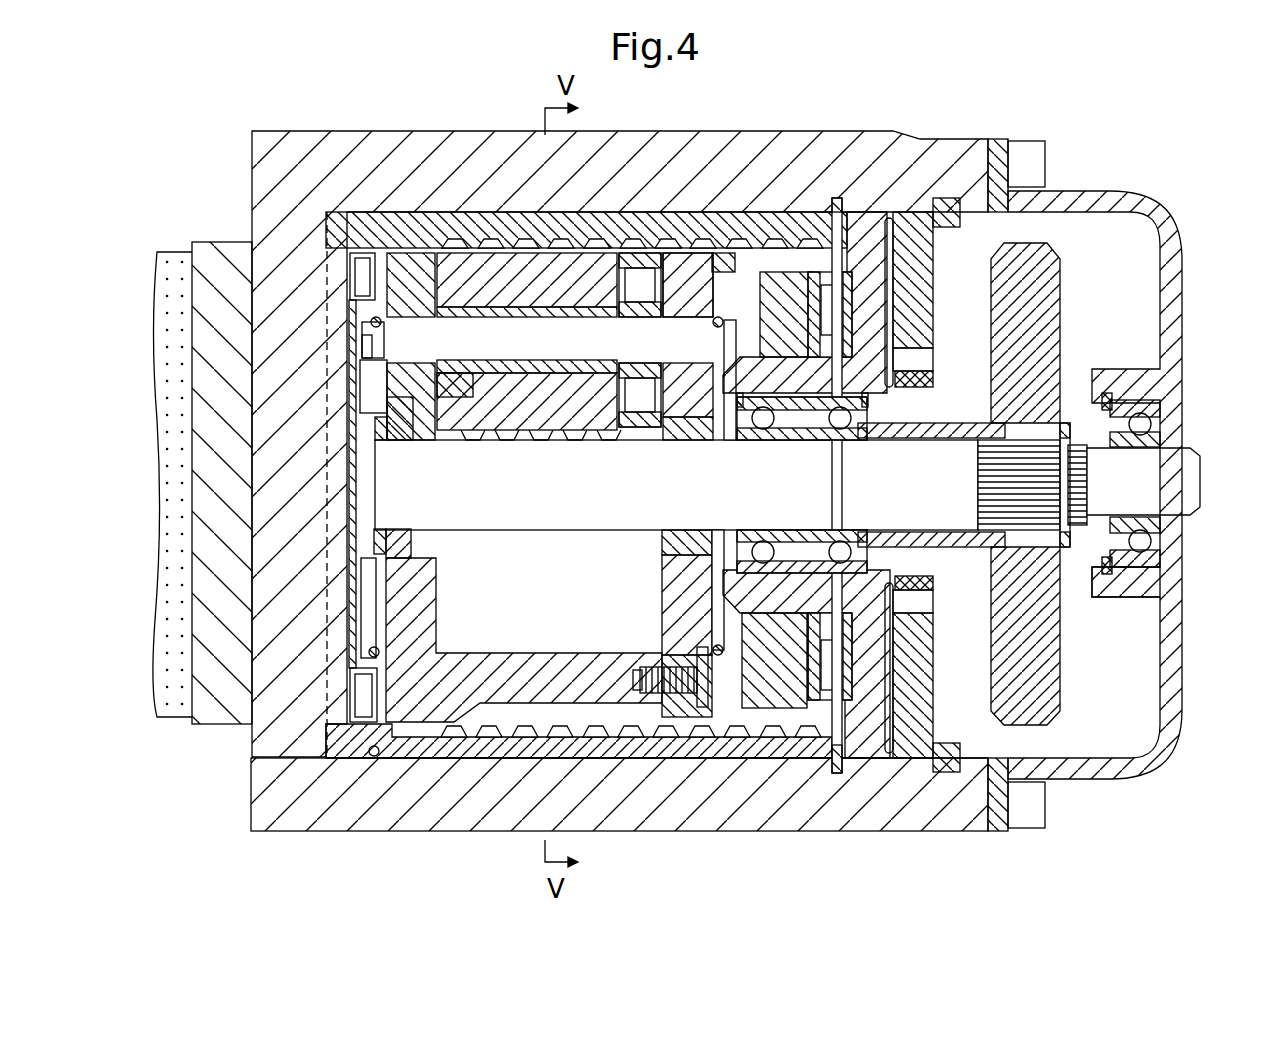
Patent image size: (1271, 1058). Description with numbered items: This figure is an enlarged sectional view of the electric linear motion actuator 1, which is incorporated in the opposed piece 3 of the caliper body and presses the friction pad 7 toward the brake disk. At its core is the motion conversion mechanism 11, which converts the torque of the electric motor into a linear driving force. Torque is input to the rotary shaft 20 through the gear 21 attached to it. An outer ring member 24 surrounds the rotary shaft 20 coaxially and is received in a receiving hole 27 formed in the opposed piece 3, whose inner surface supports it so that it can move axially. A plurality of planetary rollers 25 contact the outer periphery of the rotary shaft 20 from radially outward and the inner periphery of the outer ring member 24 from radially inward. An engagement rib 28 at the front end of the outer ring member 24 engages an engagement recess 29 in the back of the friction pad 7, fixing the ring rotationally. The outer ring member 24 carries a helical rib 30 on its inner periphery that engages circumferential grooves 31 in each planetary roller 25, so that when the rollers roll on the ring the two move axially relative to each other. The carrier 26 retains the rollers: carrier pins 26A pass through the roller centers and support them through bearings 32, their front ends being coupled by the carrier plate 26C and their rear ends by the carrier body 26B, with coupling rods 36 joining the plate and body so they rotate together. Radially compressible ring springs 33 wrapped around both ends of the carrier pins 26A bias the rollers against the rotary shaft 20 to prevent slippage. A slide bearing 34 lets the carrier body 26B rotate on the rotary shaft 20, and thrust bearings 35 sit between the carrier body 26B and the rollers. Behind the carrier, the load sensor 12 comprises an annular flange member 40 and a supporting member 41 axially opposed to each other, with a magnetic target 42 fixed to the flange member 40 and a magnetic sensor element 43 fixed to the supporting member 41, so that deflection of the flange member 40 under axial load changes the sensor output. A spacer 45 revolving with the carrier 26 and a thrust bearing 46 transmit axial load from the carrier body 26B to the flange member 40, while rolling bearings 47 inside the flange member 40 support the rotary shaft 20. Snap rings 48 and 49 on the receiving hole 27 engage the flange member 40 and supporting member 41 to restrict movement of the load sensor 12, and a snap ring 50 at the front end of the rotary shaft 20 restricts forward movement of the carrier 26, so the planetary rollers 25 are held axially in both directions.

The electric linear motion actuator 1 is at (355, 210).
The opposed piece 3 is at (270, 829).
The friction pad 7 is at (167, 262).
The motion conversion mechanism 11 is at (612, 760).
The load sensor 12 is at (942, 280).
The rotary shaft 20 is at (1200, 482).
The gear 21 is at (1092, 632).
The outer ring member 24 is at (420, 752).
The planetary rollers 25 is at (557, 250).
The carrier 26 is at (712, 285).
The carrier pins 26A is at (493, 340).
The carrier body 26B is at (685, 260).
The carrier plate 26C is at (410, 262).
The receiving hole 27 is at (374, 757).
The engagement rib 28 is at (336, 484).
The engagement recess 29 is at (336, 530).
The helical rib 30 is at (472, 737).
The circumferential grooves 31 is at (490, 440).
The bearings 32 is at (567, 440).
The radially compressible ring springs 33 is at (737, 440).
The slide bearing 34 is at (683, 440).
The thrust bearings 35 is at (630, 440).
The coupling rods 36 is at (545, 655).
The flange member 40 is at (867, 245).
The supporting member 41 is at (912, 243).
The magnetic target 42 is at (925, 385).
The magnetic sensor element 43 is at (925, 365).
The spacer 45 is at (752, 270).
The thrust bearing 46 is at (806, 285).
The rolling bearings 47 is at (838, 430).
The snap ring 48 is at (837, 290).
The snap ring 49 is at (947, 205).
The snap ring 50 is at (350, 432).